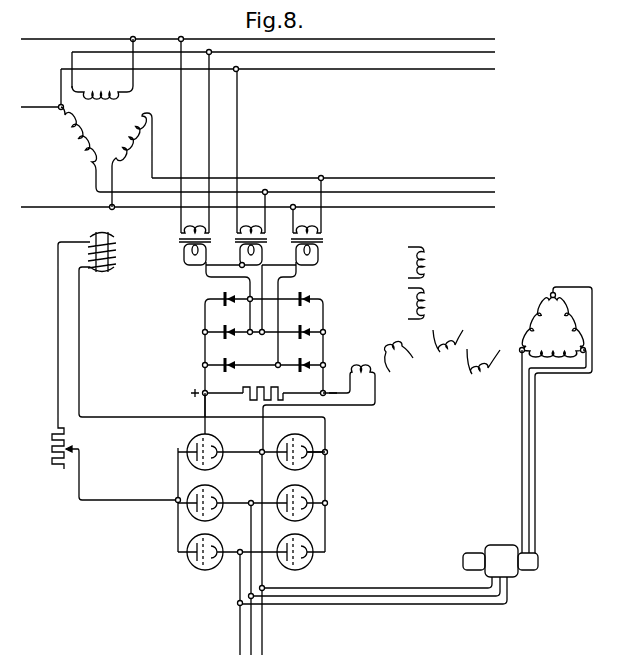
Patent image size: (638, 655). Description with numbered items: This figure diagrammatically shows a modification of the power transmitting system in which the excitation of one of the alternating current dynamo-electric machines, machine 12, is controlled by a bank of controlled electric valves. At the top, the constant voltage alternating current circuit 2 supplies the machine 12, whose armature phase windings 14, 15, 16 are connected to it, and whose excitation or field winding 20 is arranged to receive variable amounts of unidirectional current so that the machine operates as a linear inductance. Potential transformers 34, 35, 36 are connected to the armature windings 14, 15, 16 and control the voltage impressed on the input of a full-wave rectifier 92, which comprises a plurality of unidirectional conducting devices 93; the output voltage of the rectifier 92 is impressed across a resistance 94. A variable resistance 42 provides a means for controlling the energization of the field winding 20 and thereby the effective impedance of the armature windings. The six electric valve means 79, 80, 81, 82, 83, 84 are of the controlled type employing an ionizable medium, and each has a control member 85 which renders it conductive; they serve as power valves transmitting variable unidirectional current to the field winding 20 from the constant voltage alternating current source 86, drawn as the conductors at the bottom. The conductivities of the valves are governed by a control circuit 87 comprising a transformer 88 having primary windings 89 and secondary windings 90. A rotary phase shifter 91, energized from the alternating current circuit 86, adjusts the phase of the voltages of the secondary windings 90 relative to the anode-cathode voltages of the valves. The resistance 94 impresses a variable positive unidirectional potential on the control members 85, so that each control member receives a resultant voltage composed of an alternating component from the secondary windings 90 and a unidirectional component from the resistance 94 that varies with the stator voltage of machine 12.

The constant voltage alternating current circuit 2 is at (28, 206).
The alternating current dynamo-electric machine 12 is at (78, 230).
The armature phase winding 14 is at (102, 79).
The armature phase winding 15 is at (132, 160).
The armature phase winding 16 is at (70, 148).
The field winding 20 is at (116, 250).
The transformer 34 is at (181, 241).
The transformer 35 is at (237, 241).
The transformer 36 is at (293, 241).
The variable resistance 42 is at (48, 450).
The electric valve means 79 is at (191, 437).
The electric valve means 80 is at (283, 445).
The electric valve means 81 is at (216, 496).
The electric valve means 82 is at (283, 496).
The electric valve means 83 is at (220, 545).
The electric valve means 84 is at (284, 545).
The control member 85 is at (207, 443).
The constant voltage alternating current source 86 is at (262, 632).
The control circuit 87 is at (426, 495).
The transformer 88 is at (502, 291).
The primary windings 89 is at (553, 325).
The secondary windings 90 is at (427, 276).
The rotary phase shifter 91 is at (413, 477).
The rectifier 92 is at (196, 344).
The unidirectional conducting device 93 is at (306, 327).
The resistance 94 is at (255, 387).